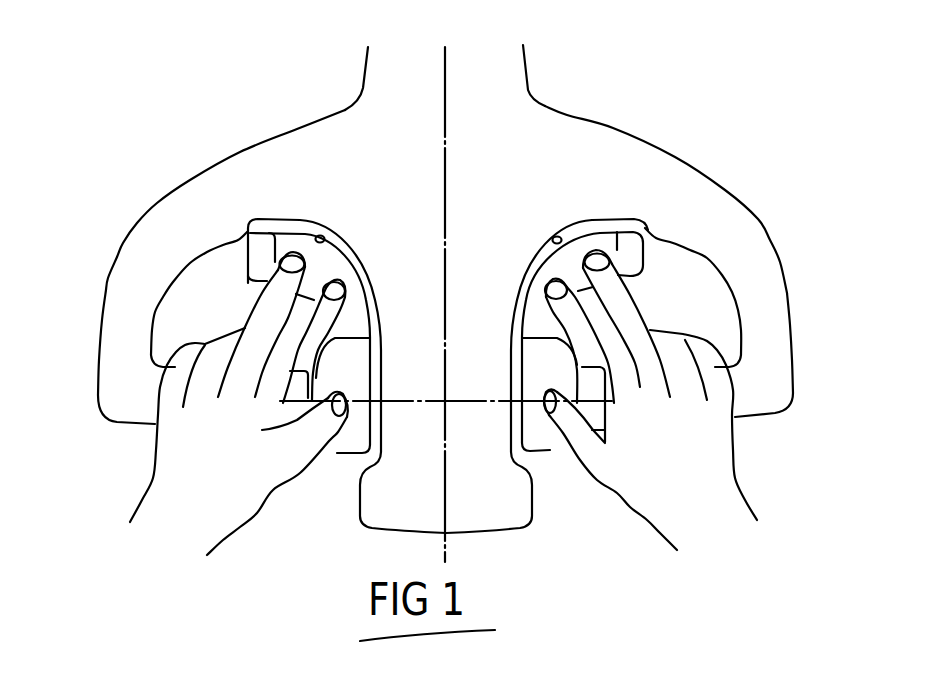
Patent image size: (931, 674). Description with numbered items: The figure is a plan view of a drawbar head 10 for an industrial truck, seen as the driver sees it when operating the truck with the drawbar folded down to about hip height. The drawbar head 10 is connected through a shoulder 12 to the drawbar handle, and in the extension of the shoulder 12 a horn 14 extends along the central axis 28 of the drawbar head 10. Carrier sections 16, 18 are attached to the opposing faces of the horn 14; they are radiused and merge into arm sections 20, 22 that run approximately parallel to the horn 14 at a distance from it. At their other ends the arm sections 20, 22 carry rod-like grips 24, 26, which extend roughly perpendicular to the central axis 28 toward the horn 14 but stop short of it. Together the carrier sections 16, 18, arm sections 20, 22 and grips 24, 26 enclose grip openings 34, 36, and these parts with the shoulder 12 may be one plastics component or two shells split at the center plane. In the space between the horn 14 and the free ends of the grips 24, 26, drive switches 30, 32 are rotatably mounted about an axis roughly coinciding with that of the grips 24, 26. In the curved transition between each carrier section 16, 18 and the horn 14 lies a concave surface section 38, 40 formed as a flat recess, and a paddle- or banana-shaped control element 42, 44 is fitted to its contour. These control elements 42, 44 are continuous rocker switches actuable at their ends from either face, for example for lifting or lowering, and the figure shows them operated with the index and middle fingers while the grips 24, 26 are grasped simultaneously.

The drawbar head 10 is at (643, 117).
The shoulder 12 is at (515, 73).
The horn 14 is at (488, 361).
The carrier section 16 is at (268, 197).
The carrier section 18 is at (662, 197).
The arm section 20 is at (138, 331).
The arm section 22 is at (780, 320).
The grip 24 is at (147, 424).
The grip 26 is at (748, 411).
The central axis 28 is at (445, 148).
The drive switch 30 is at (346, 440).
The drive switch 32 is at (537, 437).
The grip opening 34 is at (198, 328).
The grip opening 36 is at (718, 321).
The concave surface section 38 is at (330, 240).
The concave surface section 40 is at (567, 234).
The control element 42 is at (273, 262).
The control element 44 is at (630, 259).